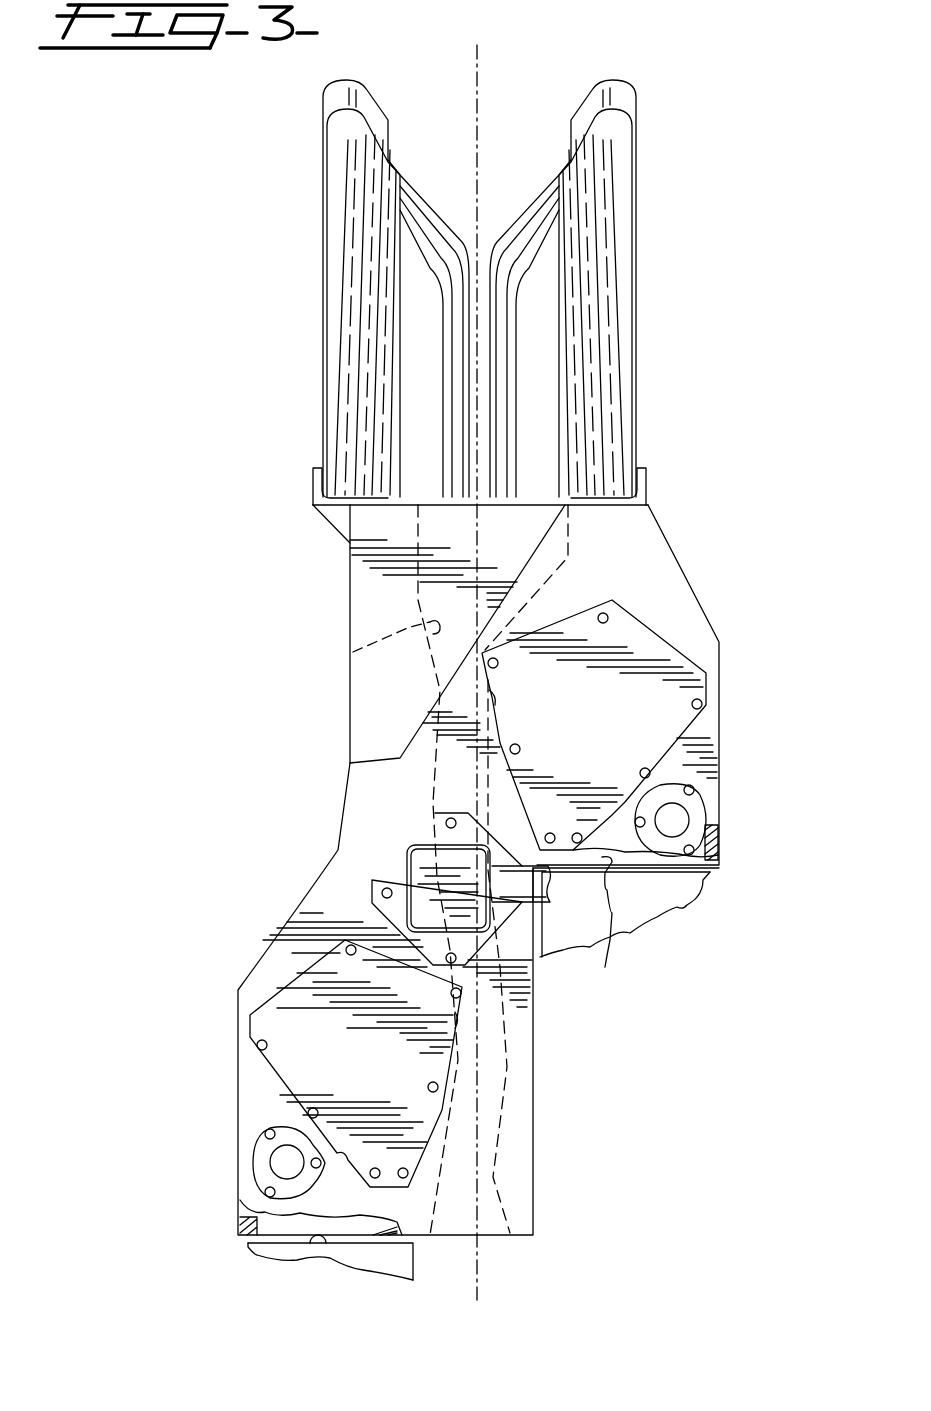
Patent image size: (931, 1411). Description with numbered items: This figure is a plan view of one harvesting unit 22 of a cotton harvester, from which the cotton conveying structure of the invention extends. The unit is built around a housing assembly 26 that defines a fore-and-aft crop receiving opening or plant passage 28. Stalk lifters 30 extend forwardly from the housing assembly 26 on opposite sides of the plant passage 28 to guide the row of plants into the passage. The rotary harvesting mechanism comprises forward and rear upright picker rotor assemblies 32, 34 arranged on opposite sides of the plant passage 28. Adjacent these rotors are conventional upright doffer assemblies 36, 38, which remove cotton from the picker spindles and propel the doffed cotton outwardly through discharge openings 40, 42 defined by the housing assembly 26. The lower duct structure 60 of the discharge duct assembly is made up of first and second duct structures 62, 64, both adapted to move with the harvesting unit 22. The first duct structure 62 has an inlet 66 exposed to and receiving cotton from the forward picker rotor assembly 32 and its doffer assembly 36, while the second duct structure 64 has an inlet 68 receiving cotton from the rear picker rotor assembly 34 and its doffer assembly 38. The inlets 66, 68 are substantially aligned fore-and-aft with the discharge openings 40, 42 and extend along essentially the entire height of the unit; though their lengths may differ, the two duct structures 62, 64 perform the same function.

The hydraulic manifold assembly 22 is at (293, 573).
The housing assembly 26 is at (637, 553).
The plant passage 28 is at (353, 653).
The stalk lifters 30 is at (590, 100).
The forward picker rotor assembly 32 is at (600, 725).
The rear picker rotor assembly 34 is at (368, 1059).
The doffer assembly 36 is at (722, 802).
The doffer assembly 38 is at (252, 1171).
The discharge opening 40 is at (703, 830).
The discharge opening 42 is at (240, 1202).
The lower duct structure 60 is at (648, 940).
The first duct structure 62 is at (677, 893).
The second duct structure 64 is at (403, 1260).
The inlet 66 is at (601, 923).
The inlet 68 is at (305, 1247).